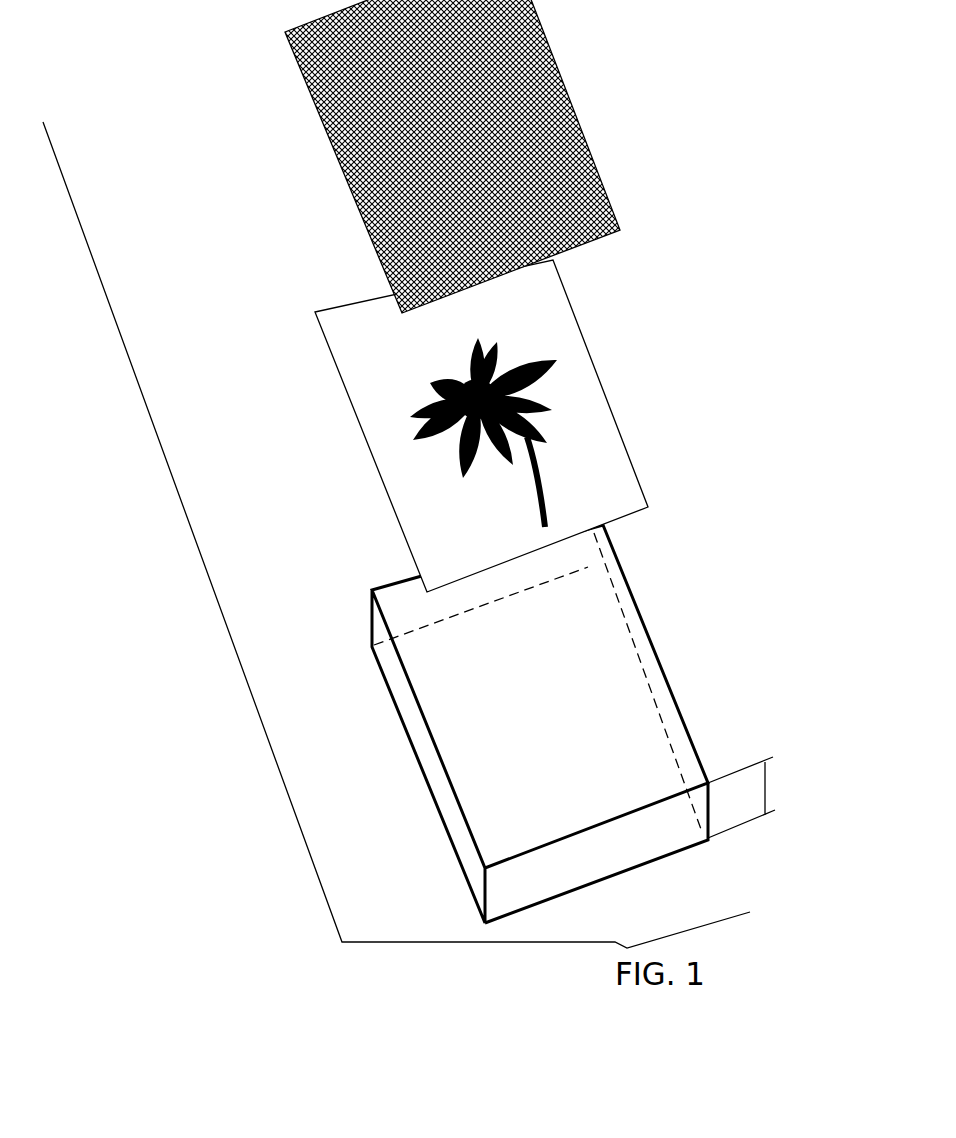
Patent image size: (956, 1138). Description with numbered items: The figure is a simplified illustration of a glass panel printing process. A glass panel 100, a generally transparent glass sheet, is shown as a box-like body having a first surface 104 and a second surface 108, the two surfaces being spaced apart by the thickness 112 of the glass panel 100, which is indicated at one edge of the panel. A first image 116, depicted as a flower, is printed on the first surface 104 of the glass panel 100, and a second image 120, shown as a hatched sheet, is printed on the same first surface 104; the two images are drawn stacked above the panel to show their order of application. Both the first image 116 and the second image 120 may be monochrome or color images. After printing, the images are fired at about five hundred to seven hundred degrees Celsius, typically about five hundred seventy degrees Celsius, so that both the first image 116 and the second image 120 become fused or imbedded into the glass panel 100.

The glass panel 100 is at (588, 724).
The first surface 104 is at (627, 710).
The second surface 108 is at (463, 843).
The thickness 112 is at (767, 788).
The first image 116 is at (428, 407).
The second image 120 is at (590, 149).